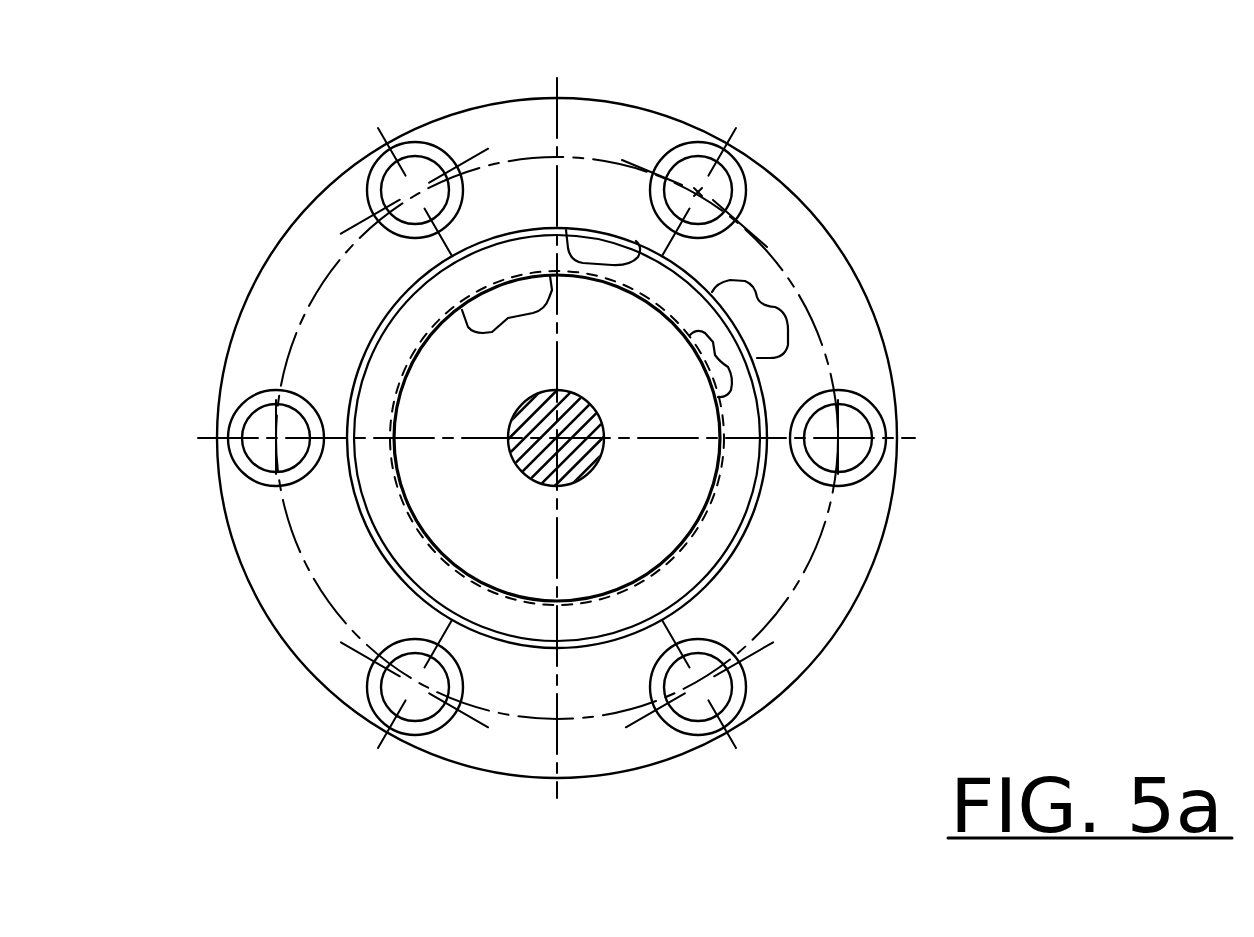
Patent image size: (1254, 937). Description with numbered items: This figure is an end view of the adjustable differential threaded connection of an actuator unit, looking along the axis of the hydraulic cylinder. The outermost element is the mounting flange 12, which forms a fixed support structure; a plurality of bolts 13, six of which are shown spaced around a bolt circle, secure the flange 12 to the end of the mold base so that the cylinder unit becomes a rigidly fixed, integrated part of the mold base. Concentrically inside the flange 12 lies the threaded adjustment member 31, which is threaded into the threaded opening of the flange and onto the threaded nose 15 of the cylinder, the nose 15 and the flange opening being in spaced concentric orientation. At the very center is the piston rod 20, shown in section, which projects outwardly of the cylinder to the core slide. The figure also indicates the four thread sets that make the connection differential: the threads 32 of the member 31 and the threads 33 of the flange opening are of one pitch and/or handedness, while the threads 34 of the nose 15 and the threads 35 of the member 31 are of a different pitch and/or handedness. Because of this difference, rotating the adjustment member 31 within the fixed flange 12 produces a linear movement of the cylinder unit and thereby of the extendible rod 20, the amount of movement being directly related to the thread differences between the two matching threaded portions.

The mounting flange 12 is at (303, 595).
The bolts 13 is at (260, 457).
The threaded nose 15 is at (674, 541).
The piston rod 20 is at (537, 490).
The threaded adjustment member 31 is at (723, 505).
The threads of adjustment member 32 is at (737, 325).
The threads of flange threaded opening 33 is at (587, 224).
The threads of nose 34 is at (706, 377).
The threads of adjustment member 35 is at (512, 279).